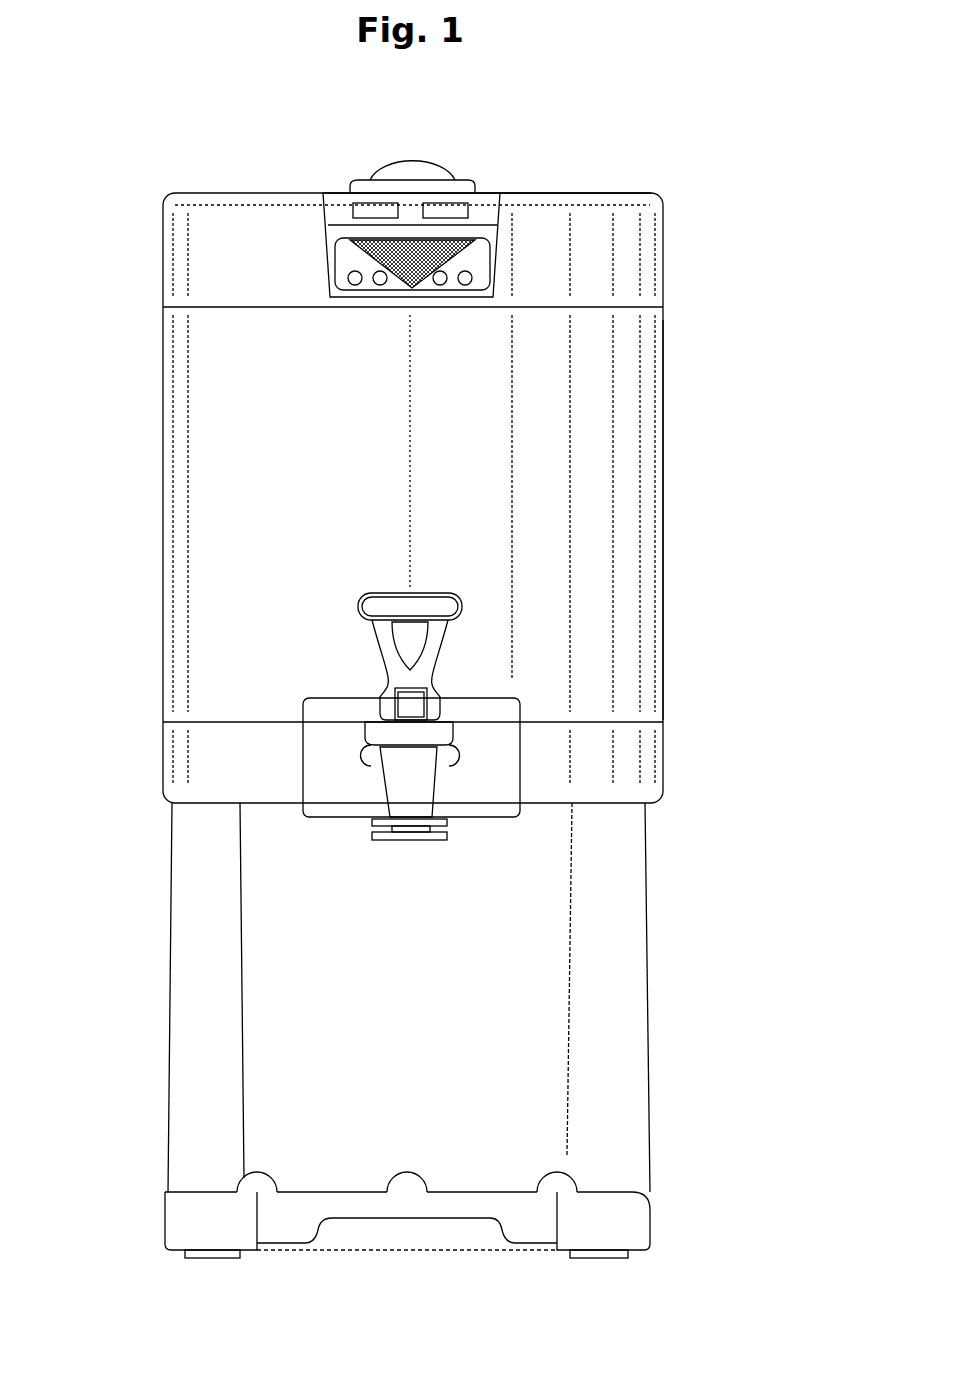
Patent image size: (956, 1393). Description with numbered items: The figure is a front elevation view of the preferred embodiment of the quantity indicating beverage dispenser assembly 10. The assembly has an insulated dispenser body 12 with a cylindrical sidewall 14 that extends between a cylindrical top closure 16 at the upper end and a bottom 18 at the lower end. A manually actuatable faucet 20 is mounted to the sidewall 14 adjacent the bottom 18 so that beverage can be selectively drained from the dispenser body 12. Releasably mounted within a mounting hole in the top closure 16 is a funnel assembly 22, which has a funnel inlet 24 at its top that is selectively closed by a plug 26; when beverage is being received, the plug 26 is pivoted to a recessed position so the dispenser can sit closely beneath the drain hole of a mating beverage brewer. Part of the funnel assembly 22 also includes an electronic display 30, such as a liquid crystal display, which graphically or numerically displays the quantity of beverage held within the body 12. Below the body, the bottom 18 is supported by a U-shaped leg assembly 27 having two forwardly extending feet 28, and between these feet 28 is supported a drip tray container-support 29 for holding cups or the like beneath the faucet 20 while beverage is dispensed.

The quantity indicating beverage dispenser assembly 10 is at (700, 190).
The dispenser body 12 is at (595, 545).
The cylindrical sidewall 14 is at (663, 378).
The cylindrical top closure 16 is at (628, 262).
The bottom 18 is at (628, 722).
The manually actuatable faucet 20 is at (375, 650).
The funnel assembly 22 is at (490, 245).
The funnel inlet 24 is at (460, 178).
The plug 26 is at (424, 162).
The U-shaped leg assembly 27 is at (618, 965).
The feet 28 is at (190, 1218).
The drip tray container-support 29 is at (472, 1212).
The electronic display 30 is at (372, 256).